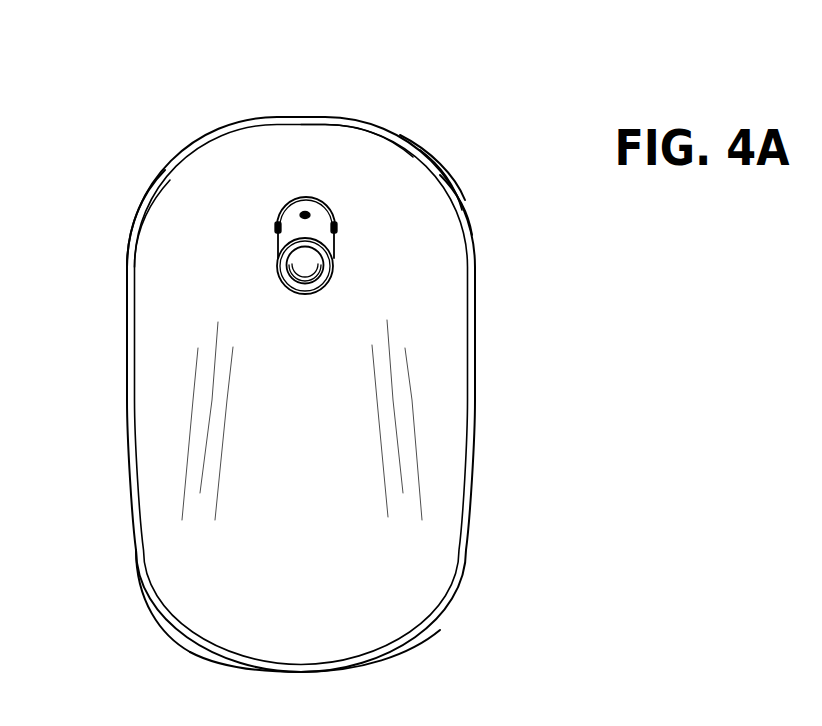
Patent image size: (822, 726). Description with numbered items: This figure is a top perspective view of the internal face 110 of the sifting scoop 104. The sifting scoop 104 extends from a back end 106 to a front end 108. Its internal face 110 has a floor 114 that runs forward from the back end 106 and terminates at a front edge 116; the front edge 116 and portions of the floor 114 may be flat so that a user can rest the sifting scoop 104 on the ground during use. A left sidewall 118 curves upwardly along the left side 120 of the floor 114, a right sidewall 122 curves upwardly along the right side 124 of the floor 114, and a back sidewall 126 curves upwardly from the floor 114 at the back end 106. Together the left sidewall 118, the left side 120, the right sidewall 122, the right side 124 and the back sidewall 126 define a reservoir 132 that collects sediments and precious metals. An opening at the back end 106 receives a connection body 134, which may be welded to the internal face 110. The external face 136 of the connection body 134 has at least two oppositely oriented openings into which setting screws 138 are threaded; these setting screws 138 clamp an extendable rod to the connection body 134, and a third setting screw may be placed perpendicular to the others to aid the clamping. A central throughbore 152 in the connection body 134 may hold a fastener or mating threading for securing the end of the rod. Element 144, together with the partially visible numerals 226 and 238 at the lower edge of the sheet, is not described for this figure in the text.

The sifting scoop 104 is at (475, 403).
The back end 106 is at (443, 190).
The front end 108 is at (180, 633).
The internal face 110 is at (443, 473).
The floor 114 is at (375, 617).
The front edge 116 is at (245, 658).
The left sidewall 118 is at (163, 247).
The left side 120 is at (187, 248).
The right sidewall 122 is at (437, 228).
The right side 124 is at (407, 217).
The back sidewall 126 is at (348, 152).
The reservoir 132 is at (110, 349).
The connection body 134 is at (277, 263).
The external face 136 is at (288, 214).
The setting screws 138 is at (277, 226).
The collar 144 is at (333, 279).
The central throughbore 152 is at (301, 278).
The neck 226 is at (687, 725).
The tabs 238 is at (652, 725).